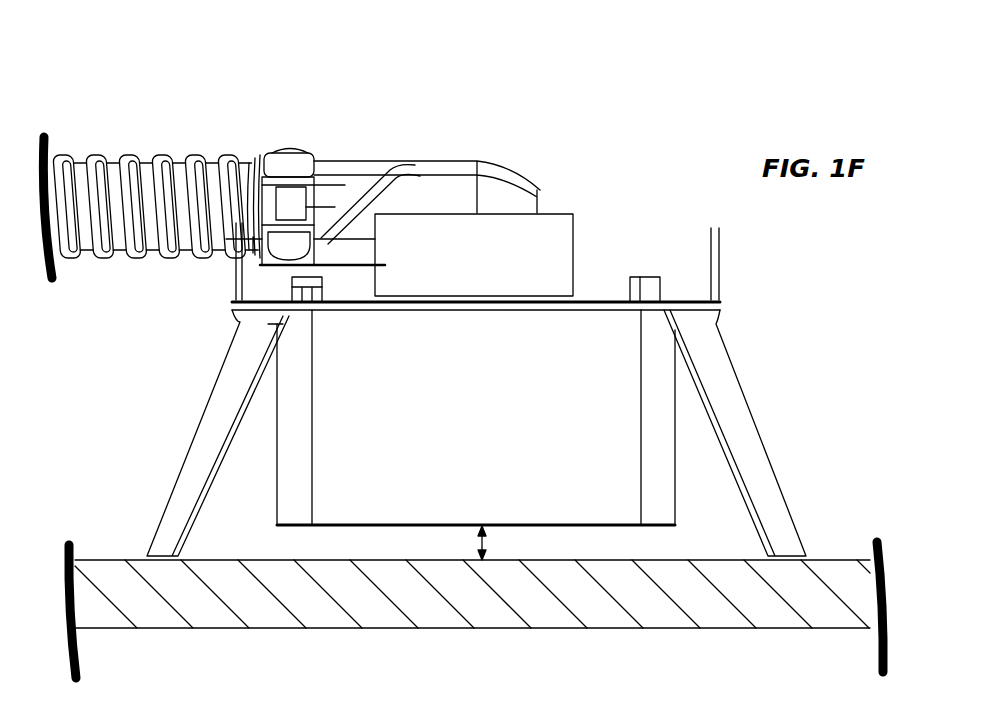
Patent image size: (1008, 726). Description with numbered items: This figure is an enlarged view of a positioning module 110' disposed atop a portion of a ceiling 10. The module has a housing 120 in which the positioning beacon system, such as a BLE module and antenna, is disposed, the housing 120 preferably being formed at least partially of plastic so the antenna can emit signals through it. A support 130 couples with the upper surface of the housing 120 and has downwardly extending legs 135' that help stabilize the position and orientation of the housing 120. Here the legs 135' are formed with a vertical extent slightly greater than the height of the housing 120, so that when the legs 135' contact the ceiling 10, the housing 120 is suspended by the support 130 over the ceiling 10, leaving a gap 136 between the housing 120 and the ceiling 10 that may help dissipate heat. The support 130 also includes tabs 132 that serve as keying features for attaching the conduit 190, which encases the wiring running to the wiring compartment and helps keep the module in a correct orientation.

The positioning module 110' is at (547, 77).
The conduit 190 is at (197, 172).
The tabs 132 is at (574, 213).
The support 130 is at (598, 300).
The legs 135' is at (459, 433).
The housing 120 is at (335, 490).
The gap 136 is at (478, 542).
The ceiling 10 is at (362, 597).